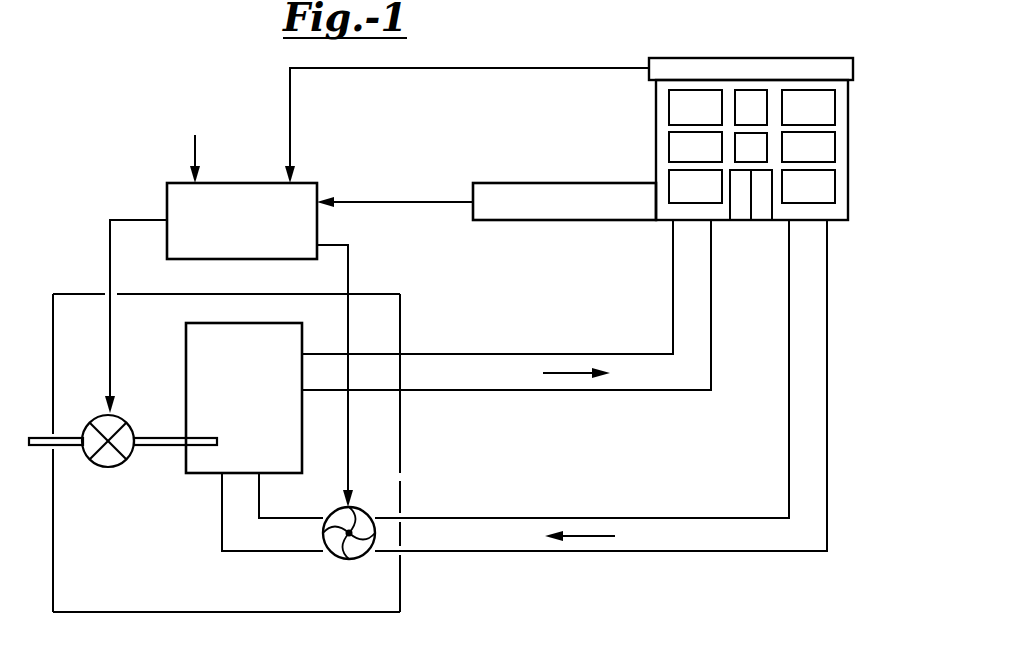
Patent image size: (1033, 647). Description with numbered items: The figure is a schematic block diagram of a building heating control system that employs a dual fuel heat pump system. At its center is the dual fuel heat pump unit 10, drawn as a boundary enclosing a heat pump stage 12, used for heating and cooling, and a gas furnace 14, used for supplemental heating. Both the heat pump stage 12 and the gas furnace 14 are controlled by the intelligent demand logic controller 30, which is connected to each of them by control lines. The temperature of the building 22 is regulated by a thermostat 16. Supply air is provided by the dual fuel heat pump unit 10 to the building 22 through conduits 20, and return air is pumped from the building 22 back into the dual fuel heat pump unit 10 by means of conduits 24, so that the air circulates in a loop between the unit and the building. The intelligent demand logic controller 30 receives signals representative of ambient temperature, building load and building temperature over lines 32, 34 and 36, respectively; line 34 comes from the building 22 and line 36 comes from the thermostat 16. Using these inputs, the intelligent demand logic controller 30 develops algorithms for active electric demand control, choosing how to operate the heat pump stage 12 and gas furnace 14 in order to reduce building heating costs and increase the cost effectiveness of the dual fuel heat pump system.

The dual fuel heat pump unit 10 is at (410, 473).
The heat pump stage 12 is at (358, 510).
The gas furnace 14 is at (186, 388).
The thermostat 16 is at (525, 183).
The conduits 20 is at (625, 392).
The building 22 is at (749, 58).
The conduits 24 is at (827, 410).
The intelligent demand logic controller 30 is at (218, 183).
The line 32 is at (195, 148).
The line 34 is at (488, 68).
The line 36 is at (387, 202).